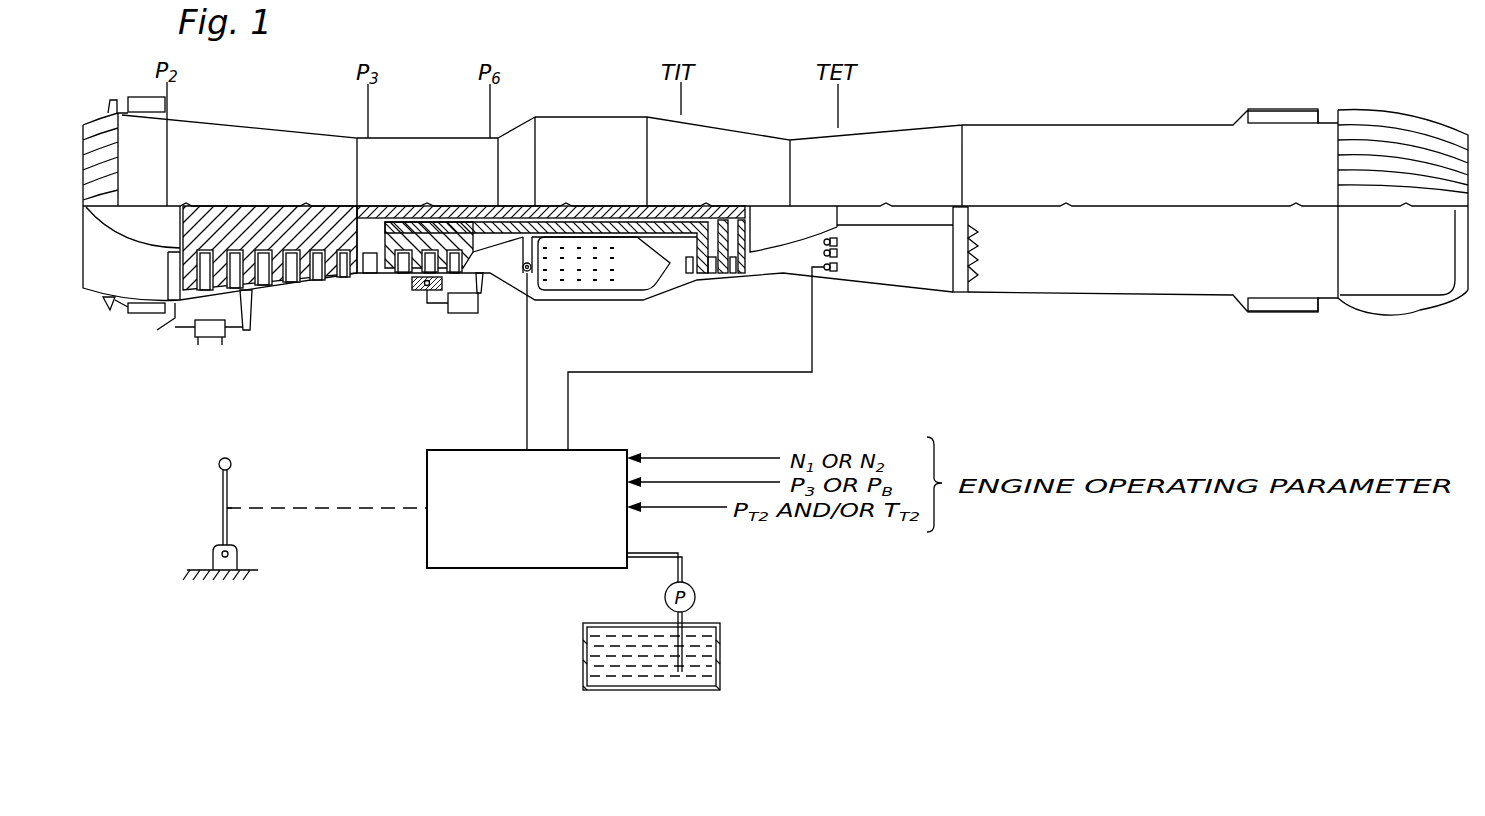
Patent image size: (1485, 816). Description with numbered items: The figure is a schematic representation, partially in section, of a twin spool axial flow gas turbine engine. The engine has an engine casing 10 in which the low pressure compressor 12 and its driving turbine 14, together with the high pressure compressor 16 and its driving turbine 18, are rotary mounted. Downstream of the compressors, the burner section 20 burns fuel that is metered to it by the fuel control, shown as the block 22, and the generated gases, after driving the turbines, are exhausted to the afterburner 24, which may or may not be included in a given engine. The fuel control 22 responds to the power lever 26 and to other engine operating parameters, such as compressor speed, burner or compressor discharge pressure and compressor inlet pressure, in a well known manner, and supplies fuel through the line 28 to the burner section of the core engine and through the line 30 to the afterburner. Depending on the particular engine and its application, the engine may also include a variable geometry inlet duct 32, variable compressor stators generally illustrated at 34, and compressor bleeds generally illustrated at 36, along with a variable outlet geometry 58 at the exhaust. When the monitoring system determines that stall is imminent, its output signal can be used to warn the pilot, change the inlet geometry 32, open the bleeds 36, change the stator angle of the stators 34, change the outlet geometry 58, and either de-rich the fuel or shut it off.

The engine casing 10 is at (1065, 125).
The low pressure compressor 12 is at (262, 212).
The driving turbine 14 is at (752, 242).
The high pressure compressor 16 is at (393, 270).
The driving turbine 18 is at (703, 272).
The burner section 20 is at (586, 287).
The fuel control 22 is at (478, 563).
The afterburner 24 is at (1094, 288).
The power lever 26 is at (227, 533).
The fuel line 28 is at (527, 391).
The fuel line 30 is at (709, 372).
The variable geometry inlet duct 32 is at (100, 298).
The variable compressor stators 34 is at (192, 333).
The compressor bleeds 36 is at (410, 292).
The outlet geometry 58 is at (1396, 115).